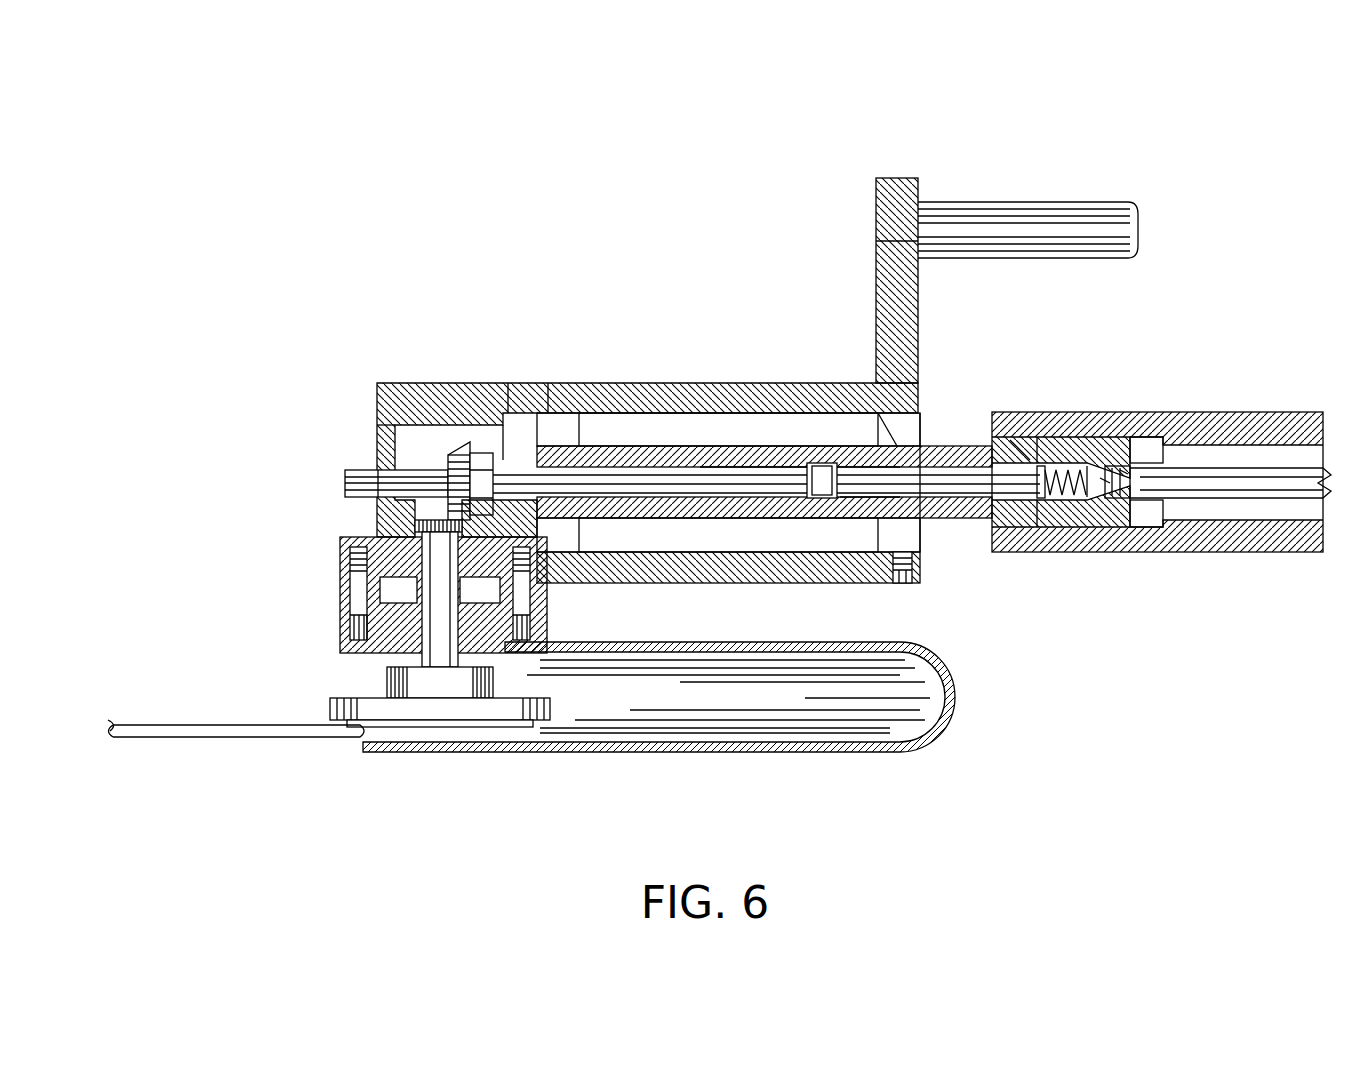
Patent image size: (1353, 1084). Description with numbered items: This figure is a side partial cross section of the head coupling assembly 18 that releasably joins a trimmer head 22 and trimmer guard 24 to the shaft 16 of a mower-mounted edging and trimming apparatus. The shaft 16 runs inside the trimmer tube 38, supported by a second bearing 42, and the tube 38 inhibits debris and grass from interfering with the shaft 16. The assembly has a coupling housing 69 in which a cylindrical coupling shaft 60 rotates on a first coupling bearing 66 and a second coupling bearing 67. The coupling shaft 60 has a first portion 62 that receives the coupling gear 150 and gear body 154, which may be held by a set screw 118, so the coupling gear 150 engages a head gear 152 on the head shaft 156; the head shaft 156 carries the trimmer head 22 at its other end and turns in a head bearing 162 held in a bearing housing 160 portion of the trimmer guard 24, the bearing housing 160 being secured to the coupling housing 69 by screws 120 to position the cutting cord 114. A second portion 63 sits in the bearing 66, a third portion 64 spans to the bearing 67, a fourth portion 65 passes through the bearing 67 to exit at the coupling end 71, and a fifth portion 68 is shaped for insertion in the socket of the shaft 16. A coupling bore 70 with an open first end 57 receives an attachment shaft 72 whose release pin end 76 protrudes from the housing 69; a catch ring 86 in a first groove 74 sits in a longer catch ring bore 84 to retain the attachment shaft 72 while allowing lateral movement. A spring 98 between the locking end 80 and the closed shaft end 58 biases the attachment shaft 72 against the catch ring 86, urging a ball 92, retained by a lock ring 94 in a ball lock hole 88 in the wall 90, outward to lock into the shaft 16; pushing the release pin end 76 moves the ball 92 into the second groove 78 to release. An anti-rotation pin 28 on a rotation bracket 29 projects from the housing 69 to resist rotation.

The shaft 16 is at (1262, 477).
The head coupling assembly 18 is at (634, 278).
The trimmer head 22 is at (497, 708).
The trimmer guard 24 is at (918, 748).
The anti-rotation pin 28 is at (1017, 208).
The rotation bracket 29 is at (912, 178).
The trimmer tube 38 is at (1197, 413).
The second bearing 42 is at (1140, 443).
The open first end 57 is at (378, 400).
The closed shaft end 58 is at (1098, 450).
The coupling shaft 60 is at (395, 380).
The first portion 62 is at (540, 566).
The second portion 63 is at (553, 512).
The third portion 64 is at (672, 522).
The fourth portion 65 is at (853, 383).
The first coupling bearing 66 is at (508, 413).
The second coupling bearing 67 is at (922, 540).
The fifth portion 68 is at (1030, 445).
The coupling housing 69 is at (382, 383).
The coupling bore 70 is at (548, 383).
The coupling end 71 is at (912, 562).
The attachment shaft 72 is at (378, 433).
The first groove 74 is at (793, 465).
The release pin end 76 is at (343, 473).
The second groove 78 is at (1040, 452).
The locking end 80 is at (1083, 466).
The catch ring bore 84 is at (828, 468).
The catch ring 86 is at (800, 465).
The ball lock hole 88 is at (1068, 520).
The wall 90 is at (1100, 510).
The ball 92 is at (1062, 470).
The lock ring 94 is at (1048, 470).
The spring 98 is at (1125, 500).
The cutting cord 114 is at (222, 735).
The set screw 118 is at (457, 458).
The screws 120 is at (347, 655).
The coupling gear 150 is at (448, 467).
The head gear 152 is at (430, 520).
The gear body 154 is at (487, 453).
The head shaft 156 is at (493, 657).
The bearing housing 160 is at (340, 598).
The head bearing 162 is at (340, 587).